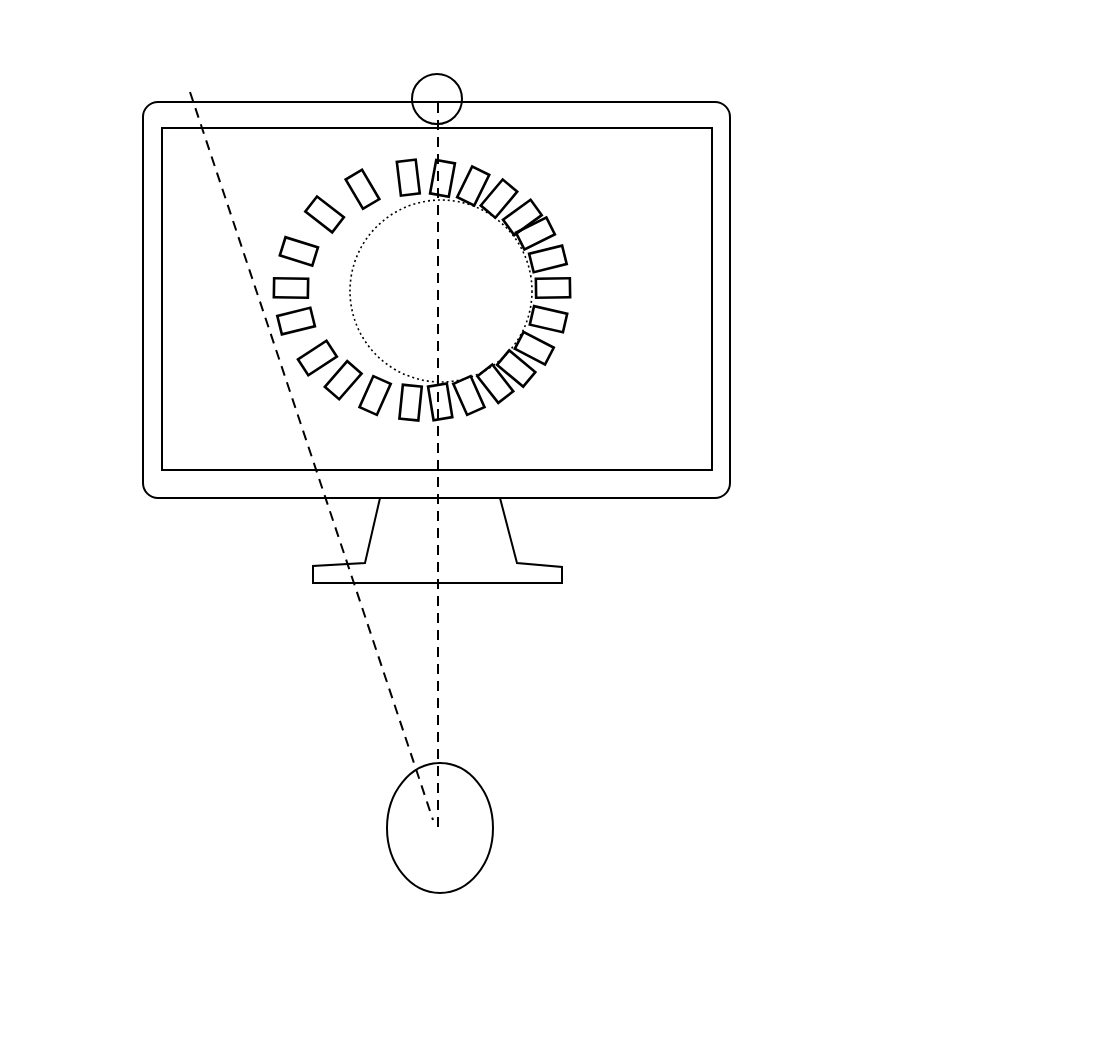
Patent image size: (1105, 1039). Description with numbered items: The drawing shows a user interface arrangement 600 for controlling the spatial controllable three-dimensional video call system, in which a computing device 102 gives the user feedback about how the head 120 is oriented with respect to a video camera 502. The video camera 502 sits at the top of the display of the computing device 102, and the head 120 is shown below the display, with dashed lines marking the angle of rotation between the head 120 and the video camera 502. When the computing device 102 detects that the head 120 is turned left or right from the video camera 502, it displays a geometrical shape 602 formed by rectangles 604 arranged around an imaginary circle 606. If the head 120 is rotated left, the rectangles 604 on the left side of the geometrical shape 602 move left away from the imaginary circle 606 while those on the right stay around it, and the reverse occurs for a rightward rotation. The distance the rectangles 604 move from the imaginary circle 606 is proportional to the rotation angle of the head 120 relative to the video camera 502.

The system / arrangement 600 is at (1002, 80).
The computing device 102 is at (160, 120).
The video camera 502 is at (420, 80).
The geometrical figure 602 is at (532, 162).
The rectangles 604 is at (362, 192).
The imaginary circle 606 is at (353, 310).
The head 120 is at (457, 858).